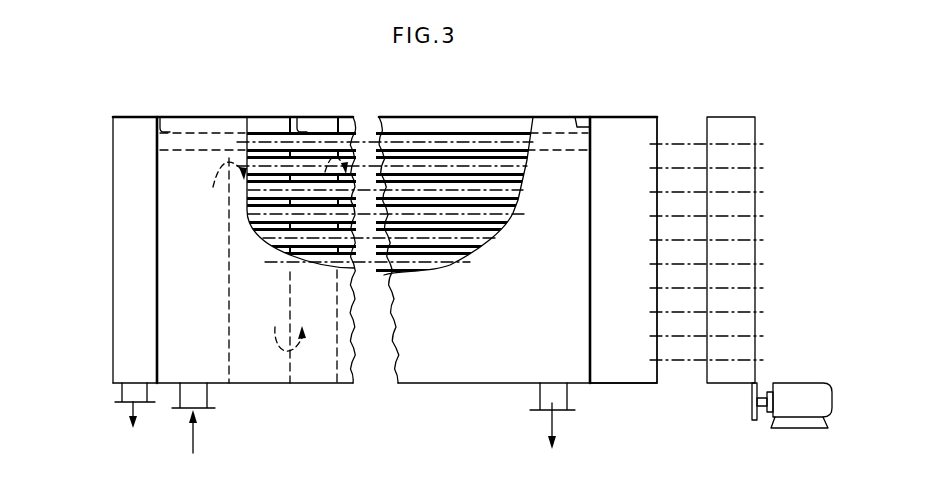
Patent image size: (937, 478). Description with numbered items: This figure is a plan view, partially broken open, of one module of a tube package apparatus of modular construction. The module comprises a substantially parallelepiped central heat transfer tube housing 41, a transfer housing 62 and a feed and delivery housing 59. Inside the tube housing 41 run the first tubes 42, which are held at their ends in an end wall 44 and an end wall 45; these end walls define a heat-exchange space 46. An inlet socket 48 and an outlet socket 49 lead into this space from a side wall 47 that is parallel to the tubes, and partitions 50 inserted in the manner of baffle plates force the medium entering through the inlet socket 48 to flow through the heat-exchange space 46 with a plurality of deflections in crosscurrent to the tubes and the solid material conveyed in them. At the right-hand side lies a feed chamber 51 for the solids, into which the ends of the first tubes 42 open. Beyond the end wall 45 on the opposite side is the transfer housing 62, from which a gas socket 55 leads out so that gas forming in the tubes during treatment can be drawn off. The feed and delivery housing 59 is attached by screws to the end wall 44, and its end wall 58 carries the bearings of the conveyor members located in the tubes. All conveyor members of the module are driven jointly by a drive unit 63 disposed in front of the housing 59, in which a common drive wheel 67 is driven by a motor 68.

The heat transfer tube housing 41 is at (402, 110).
The first tubes 42 is at (461, 140).
The end wall 44 is at (576, 117).
The end wall 45 is at (170, 117).
The heat-exchange space 46 is at (504, 125).
The side wall 47 is at (318, 384).
The inlet socket 48 is at (195, 400).
The outlet socket 49 is at (540, 400).
The partitions 50 is at (304, 117).
The feed chamber 51 is at (625, 130).
The gas socket 55 is at (132, 392).
The end wall 58 is at (657, 375).
The delivery housing 59 is at (623, 390).
The transfer housing 62 is at (132, 110).
The drive unit 63 is at (730, 110).
The drive wheel 67 is at (748, 388).
The motor 68 is at (796, 393).